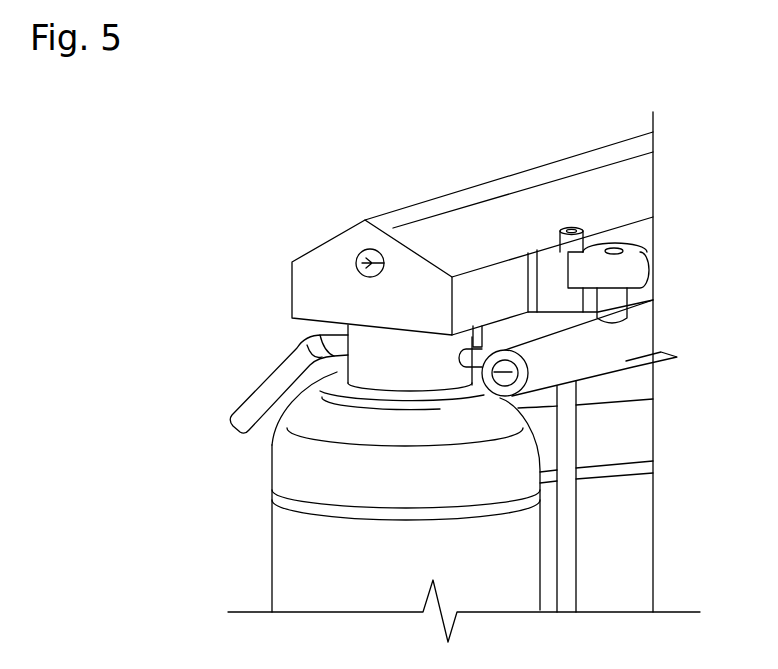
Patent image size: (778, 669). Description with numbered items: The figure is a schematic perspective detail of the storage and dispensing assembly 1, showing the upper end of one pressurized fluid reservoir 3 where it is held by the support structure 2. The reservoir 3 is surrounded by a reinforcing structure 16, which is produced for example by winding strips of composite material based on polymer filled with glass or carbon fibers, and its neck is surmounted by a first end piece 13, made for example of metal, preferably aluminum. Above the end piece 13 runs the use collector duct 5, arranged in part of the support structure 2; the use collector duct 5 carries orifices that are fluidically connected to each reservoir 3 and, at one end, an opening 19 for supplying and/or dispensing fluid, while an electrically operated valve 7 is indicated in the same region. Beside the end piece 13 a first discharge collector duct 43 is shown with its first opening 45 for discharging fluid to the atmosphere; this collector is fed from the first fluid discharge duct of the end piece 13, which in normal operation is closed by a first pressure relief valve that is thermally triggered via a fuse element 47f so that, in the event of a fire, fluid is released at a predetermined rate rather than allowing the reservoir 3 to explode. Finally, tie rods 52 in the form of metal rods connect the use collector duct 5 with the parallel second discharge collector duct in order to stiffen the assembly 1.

The storage and dispensing assembly 1 is at (234, 176).
The support structure 2 is at (347, 214).
The pressurized fluid reservoir 3 is at (287, 590).
The use collector duct 5 is at (492, 188).
The electrically operated valve 7 is at (356, 261).
The first end piece 13 is at (305, 395).
The reinforcing structure 16 is at (293, 471).
The opening 19 is at (357, 266).
The first discharge collector duct 43 is at (585, 343).
The first opening 45 is at (512, 375).
The fuse element 47f is at (263, 382).
The tie rods 52 is at (567, 507).